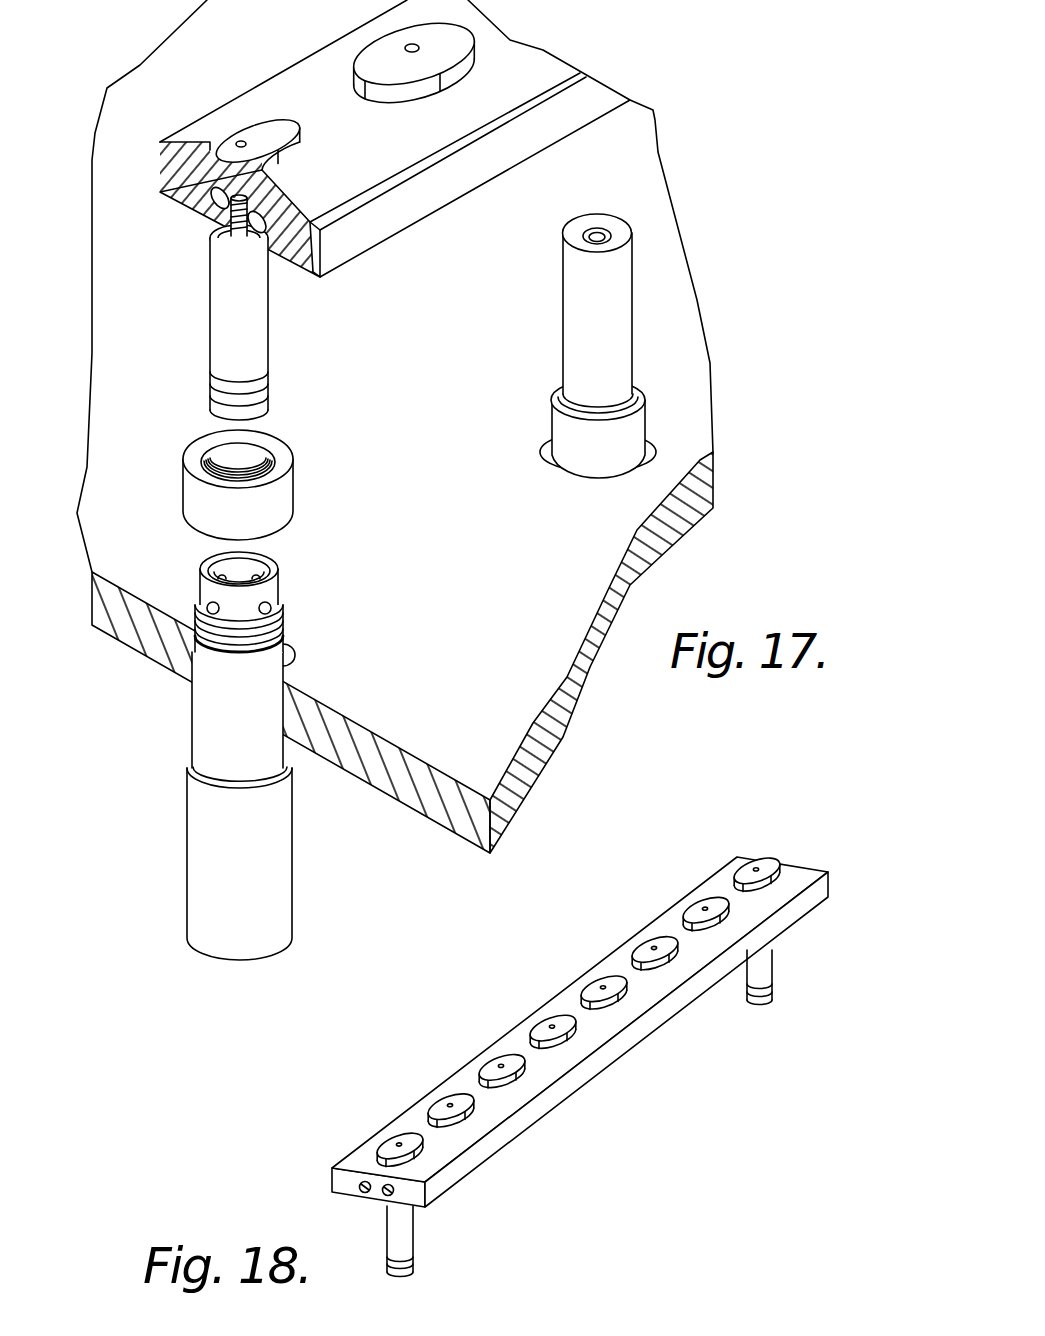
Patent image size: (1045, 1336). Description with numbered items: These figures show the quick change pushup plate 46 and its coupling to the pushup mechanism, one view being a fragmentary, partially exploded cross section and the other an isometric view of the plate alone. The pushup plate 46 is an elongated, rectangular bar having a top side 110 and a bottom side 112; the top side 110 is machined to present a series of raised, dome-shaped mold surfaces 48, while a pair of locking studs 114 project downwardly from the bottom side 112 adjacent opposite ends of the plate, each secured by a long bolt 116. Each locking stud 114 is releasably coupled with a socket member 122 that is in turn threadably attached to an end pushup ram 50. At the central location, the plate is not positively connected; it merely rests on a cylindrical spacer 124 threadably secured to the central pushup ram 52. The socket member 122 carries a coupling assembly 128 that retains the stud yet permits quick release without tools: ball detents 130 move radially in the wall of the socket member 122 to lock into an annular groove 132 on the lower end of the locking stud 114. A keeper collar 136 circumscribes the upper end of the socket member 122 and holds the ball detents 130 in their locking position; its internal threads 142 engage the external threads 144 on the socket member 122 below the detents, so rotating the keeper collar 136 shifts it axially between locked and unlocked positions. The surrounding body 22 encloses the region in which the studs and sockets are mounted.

In FIG. 17, the housing body 22 is at (123, 367).
In FIG. 17, the pushup plate 46 is at (395, 153).
In FIG. 18, the pushup plate 46 is at (539, 991).
In FIG. 17, the mold surfaces 48 is at (383, 77).
In FIG. 18, the mold surfaces 48 is at (463, 1100).
In FIG. 17, the pushup ram 50 is at (213, 875).
In FIG. 17, the pushup ram 52 is at (583, 462).
In FIG. 17, the top side 110 is at (250, 113).
In FIG. 18, the top side 110 is at (417, 1117).
In FIG. 17, the bottom side 112 is at (306, 266).
In FIG. 18, the bottom side 112 is at (340, 1196).
In FIG. 17, the locking stud 114 is at (300, 322).
In FIG. 18, the locking stud 114 is at (430, 1241).
In FIG. 17, the long bolt 116 is at (228, 203).
In FIG. 17, the socket member 122 is at (235, 756).
In FIG. 17, the cylindrical spacer 124 is at (583, 305).
In FIG. 17, the coupling assembly 128 is at (291, 501).
In FIG. 17, the ball detent 130 is at (273, 608).
In FIG. 17, the annular groove 132 is at (263, 400).
In FIG. 17, the keeper collar 136 is at (283, 492).
In FIG. 17, the internal threads 142 is at (267, 467).
In FIG. 17, the external threads 144 is at (287, 633).